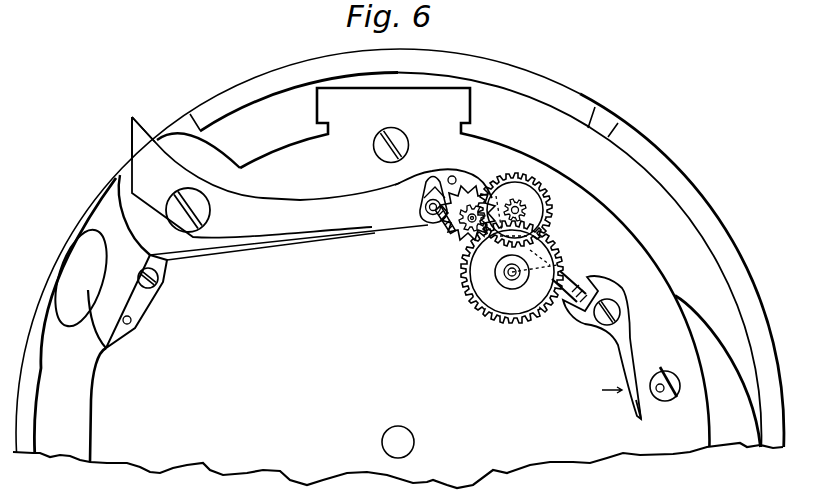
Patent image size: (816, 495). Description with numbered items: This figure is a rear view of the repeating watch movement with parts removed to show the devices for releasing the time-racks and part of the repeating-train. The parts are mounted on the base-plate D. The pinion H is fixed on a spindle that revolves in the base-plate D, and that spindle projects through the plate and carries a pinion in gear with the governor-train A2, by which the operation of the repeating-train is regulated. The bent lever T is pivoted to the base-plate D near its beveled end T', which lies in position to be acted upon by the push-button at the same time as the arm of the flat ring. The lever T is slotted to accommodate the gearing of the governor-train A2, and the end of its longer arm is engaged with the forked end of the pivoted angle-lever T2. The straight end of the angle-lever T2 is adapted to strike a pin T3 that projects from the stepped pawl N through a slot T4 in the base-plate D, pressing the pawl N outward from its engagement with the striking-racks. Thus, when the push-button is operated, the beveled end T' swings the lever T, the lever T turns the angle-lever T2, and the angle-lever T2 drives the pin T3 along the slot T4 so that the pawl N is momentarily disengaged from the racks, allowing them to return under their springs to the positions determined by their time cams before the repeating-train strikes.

The base-plate D is at (398, 288).
The bent lever T is at (267, 232).
The beveled end of bent lever T' is at (144, 127).
The pivoted angle-lever T2 is at (596, 345).
The pin T3 is at (664, 361).
The slot T4 is at (660, 397).
The stepped pawl N is at (672, 397).
The governor-train A2 is at (445, 222).
The pinion H is at (502, 277).